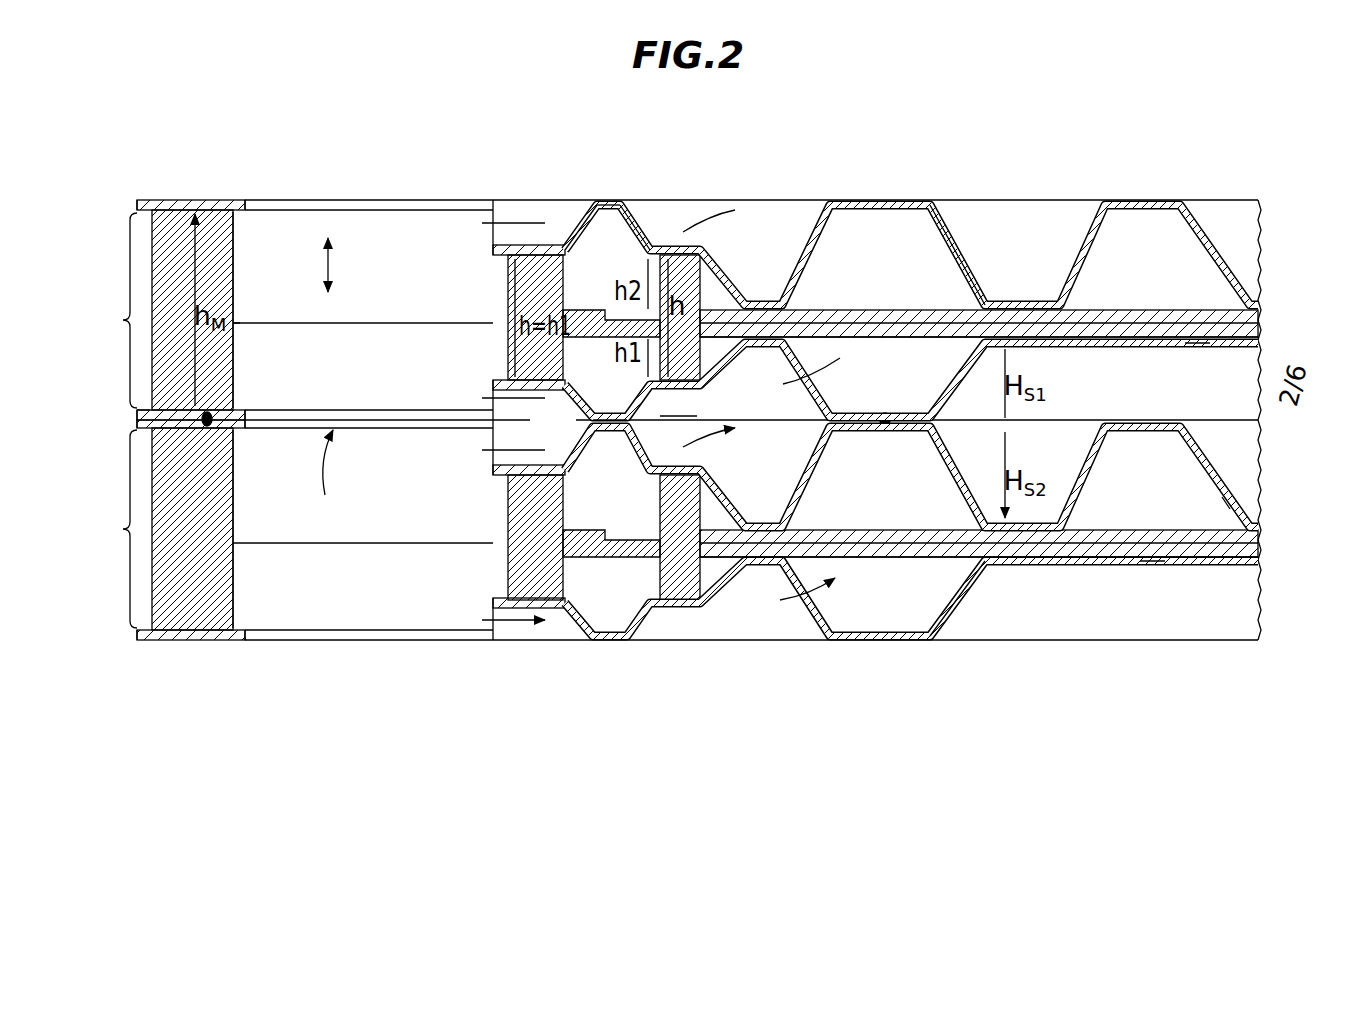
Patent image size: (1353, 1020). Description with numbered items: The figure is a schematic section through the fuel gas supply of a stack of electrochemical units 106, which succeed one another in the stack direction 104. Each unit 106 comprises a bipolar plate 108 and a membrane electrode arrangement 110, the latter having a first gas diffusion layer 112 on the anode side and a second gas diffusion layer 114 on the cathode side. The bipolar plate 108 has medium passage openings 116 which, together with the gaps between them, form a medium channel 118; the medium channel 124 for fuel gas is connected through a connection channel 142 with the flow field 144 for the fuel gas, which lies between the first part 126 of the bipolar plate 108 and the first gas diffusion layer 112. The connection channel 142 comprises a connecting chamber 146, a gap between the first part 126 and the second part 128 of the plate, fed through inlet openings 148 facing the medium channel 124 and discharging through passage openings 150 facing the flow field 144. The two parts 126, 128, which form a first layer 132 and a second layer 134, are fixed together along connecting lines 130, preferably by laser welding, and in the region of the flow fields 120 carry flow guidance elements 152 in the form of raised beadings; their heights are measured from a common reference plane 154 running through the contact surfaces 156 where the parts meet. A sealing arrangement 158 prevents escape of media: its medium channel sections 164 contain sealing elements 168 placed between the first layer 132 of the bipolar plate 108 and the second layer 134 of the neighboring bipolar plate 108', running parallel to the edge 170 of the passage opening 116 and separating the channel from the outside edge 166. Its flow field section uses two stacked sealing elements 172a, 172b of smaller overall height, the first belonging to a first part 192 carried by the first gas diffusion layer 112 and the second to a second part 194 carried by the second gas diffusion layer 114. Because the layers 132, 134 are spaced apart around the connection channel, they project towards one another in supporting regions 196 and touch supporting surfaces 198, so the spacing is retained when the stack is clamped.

The stack direction 104 is at (338, 268).
The electrochemical unit 106 is at (108, 420).
The bipolar plate 108 is at (508, 420).
The neighboring bipolar plate 108' is at (592, 149).
The membrane electrode arrangement 110 is at (1268, 313).
The first gas diffusion layer 112 is at (1212, 333).
The second gas diffusion layer 114 is at (1183, 318).
The medium passage opening 116 is at (322, 478).
The medium channel 118 is at (365, 373).
The flow field 120 is at (964, 223).
The medium channel for fuel gas 124 is at (387, 523).
The first part of the bipolar plate 126 is at (1196, 347).
The second part of the bipolar plate 128 is at (1167, 205).
The connecting line 130 is at (205, 430).
The first layer 132 is at (225, 412).
The second layer 134 is at (222, 428).
The connection channel for fuel gas 142 is at (535, 434).
The flow field for the fuel gas 144 is at (853, 364).
The connecting chamber 146 is at (678, 402).
The inlet opening 148 is at (490, 441).
The passage opening 150 is at (808, 372).
The flow guidance element 152 is at (1100, 343).
The reference plane 154 is at (1040, 200).
The contact surface 156 is at (886, 412).
The sealing arrangement 158 is at (504, 561).
The medium channel section 164 is at (240, 232).
The outside edge 166 is at (132, 415).
The sealing element 168 is at (175, 230).
The edge of a medium passage opening 170 is at (258, 415).
The first sealing element 172a is at (560, 248).
The second sealing element 172b is at (672, 250).
The first part of the sealing arrangement 192 is at (504, 576).
The second part of the sealing arrangement 194 is at (655, 503).
The supporting region 196 is at (600, 434).
The supporting surface 198 is at (605, 415).